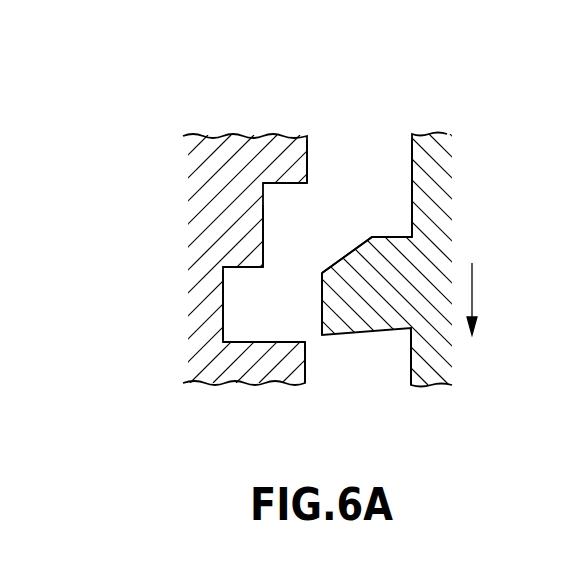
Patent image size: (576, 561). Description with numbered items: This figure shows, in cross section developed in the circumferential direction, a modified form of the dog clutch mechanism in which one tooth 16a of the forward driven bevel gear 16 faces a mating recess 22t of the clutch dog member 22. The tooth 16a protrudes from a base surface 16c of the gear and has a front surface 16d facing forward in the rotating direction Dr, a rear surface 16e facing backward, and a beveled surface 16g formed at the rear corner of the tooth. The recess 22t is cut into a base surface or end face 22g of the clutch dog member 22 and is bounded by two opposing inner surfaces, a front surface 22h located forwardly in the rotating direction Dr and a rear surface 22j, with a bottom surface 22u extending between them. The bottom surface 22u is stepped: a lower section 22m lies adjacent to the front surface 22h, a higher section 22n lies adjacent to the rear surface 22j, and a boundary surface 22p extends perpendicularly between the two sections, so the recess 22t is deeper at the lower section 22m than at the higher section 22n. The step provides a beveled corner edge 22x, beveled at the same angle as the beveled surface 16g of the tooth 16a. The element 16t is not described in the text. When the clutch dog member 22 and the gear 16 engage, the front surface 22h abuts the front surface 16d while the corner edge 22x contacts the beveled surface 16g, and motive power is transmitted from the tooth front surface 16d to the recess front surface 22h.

The clutch dog member 22 is at (233, 133).
The base surface (end face) 22g is at (306, 162).
The bottom surface 22u is at (268, 239).
The inner surface (rear surface) 22j is at (268, 184).
The higher section 22n is at (263, 210).
The corner edge 22x is at (263, 264).
The boundary surface 22p is at (225, 267).
The lower section 22m is at (223, 291).
The inner surface (front surface) 22h is at (247, 341).
The recess 22t is at (278, 312).
The forward driven bevel gear 16 is at (428, 128).
The tooth 16a is at (372, 236).
The base surface 16c is at (412, 198).
The rear surface 16e is at (388, 236).
The beveled surface 16g is at (322, 268).
The front surface 16d is at (412, 364).
The tip surface of protrusion 16t is at (322, 312).
The rotating direction Dr is at (473, 283).